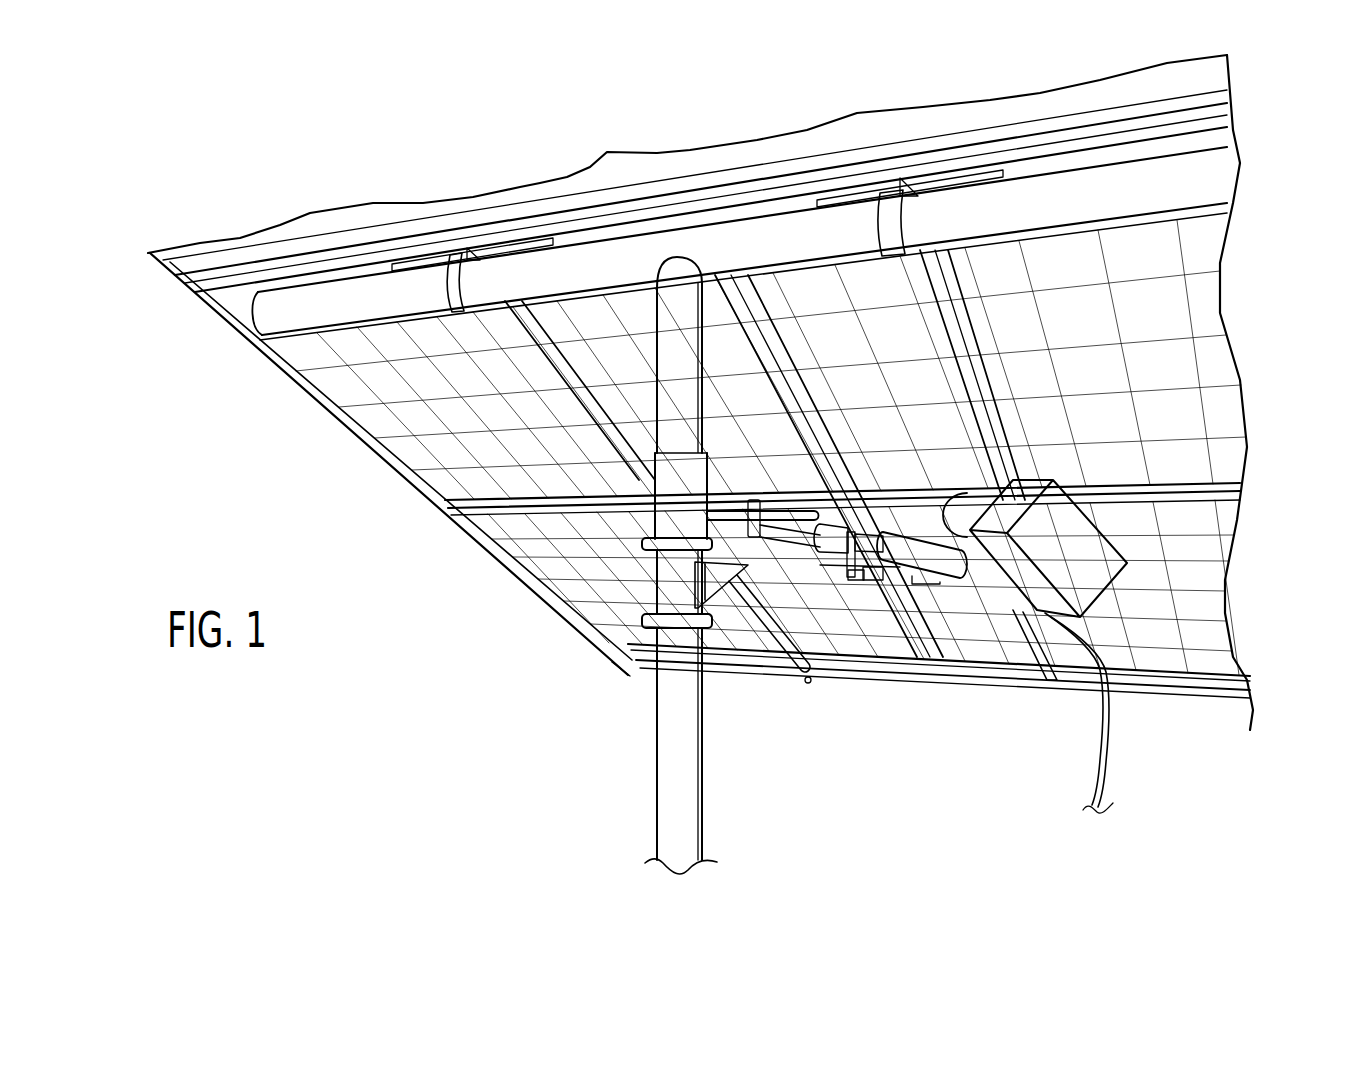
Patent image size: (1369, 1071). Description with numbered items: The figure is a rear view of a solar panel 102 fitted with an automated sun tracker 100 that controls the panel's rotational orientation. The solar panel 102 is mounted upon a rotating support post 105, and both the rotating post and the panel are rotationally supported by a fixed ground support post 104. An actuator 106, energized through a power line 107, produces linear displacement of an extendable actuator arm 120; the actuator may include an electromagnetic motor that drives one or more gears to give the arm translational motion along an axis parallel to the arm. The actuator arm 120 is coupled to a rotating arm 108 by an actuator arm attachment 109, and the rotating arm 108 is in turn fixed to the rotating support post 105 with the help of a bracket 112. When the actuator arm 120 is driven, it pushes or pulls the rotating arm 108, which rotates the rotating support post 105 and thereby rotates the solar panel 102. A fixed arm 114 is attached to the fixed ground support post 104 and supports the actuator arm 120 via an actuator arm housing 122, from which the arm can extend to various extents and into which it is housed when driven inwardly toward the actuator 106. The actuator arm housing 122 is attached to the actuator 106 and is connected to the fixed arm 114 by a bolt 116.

The automated sun tracker 100 is at (286, 168).
The solar panel 102 is at (1150, 305).
The fixed ground support post 104 is at (673, 758).
The rotating support post 105 is at (672, 313).
The actuator 106 is at (1096, 525).
The power line 107 is at (1097, 770).
The rotating arm 108 is at (800, 533).
The actuator arm attachment 109 is at (748, 530).
The bracket 112 is at (717, 503).
The fixed arm 114 is at (857, 553).
The bolt 116 is at (893, 557).
The actuator arm 120 is at (822, 567).
The actuator arm housing 122 is at (925, 553).